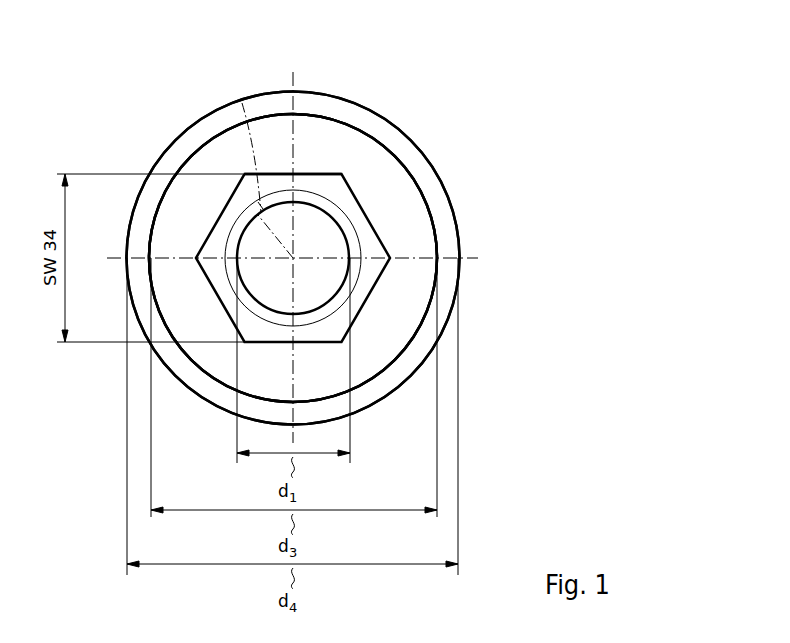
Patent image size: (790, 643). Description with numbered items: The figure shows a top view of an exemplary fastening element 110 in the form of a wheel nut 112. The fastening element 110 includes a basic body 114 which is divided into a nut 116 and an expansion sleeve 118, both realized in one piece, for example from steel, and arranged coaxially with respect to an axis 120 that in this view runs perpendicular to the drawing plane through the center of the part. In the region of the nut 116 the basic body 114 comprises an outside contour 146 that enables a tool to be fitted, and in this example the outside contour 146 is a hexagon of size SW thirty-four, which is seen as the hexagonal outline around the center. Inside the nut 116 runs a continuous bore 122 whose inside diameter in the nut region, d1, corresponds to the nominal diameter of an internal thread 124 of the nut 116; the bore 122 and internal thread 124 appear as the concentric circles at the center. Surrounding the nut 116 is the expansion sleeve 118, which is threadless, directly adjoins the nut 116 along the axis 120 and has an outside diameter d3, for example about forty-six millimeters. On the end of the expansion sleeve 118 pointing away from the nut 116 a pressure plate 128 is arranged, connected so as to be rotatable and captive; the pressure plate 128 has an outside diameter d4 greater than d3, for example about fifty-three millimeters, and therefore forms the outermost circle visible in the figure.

The fastening element 110 is at (532, 143).
The wheel nut 112 is at (293, 258).
The basic body 114 is at (328, 192).
The nut 116 is at (357, 230).
The expansion sleeve 118 is at (395, 195).
The axis 120 is at (240, 102).
The bore 122 is at (333, 246).
The internal thread 124 is at (237, 226).
The pressure plate 128 is at (400, 152).
The outside contour 146 is at (317, 173).